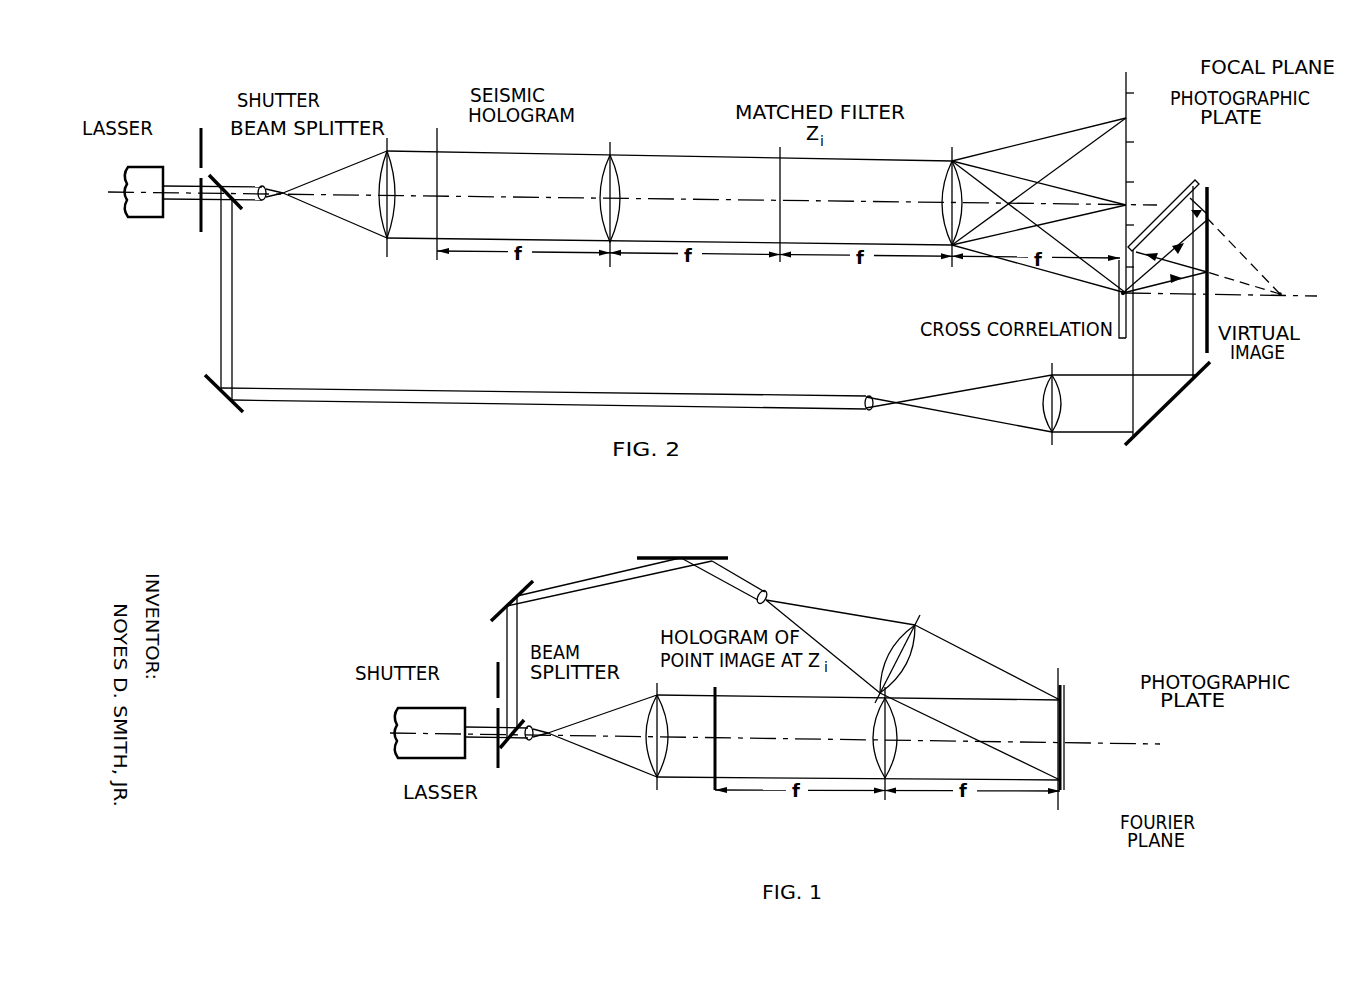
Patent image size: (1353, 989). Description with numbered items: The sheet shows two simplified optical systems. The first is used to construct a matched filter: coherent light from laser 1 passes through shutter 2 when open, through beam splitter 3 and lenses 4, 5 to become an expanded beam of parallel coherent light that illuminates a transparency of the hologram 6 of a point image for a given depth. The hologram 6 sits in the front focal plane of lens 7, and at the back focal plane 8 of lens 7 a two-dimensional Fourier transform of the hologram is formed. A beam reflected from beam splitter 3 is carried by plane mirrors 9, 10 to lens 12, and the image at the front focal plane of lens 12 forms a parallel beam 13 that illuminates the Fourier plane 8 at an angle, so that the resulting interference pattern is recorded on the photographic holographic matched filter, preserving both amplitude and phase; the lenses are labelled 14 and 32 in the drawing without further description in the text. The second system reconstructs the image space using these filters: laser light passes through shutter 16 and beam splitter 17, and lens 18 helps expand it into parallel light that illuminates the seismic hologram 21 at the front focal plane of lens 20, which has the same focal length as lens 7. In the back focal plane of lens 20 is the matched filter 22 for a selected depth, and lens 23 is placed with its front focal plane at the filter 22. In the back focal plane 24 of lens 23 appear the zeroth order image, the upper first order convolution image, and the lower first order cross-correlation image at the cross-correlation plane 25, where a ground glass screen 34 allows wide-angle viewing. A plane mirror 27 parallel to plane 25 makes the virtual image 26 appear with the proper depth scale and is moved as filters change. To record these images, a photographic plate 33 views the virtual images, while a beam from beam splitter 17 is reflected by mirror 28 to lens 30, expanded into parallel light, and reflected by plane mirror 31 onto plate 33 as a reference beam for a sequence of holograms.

In FIG. 1, the laser 1 is at (428, 759).
In FIG. 1, the shutter 2 is at (497, 679).
In FIG. 1, the beam splitter 3 is at (524, 722).
In FIG. 1, the lens 4 is at (534, 740).
In FIG. 2, the lens 5 is at (147, 170).
In FIG. 1, the lens 5 is at (657, 778).
In FIG. 1, the hologram 6 is at (718, 690).
In FIG. 1, the lens 7 is at (885, 800).
In FIG. 1, the back focal plane 8 is at (1058, 810).
In FIG. 1, the plane mirror 9 is at (515, 597).
In FIG. 1, the plane mirror 10 is at (698, 546).
In FIG. 1, the lens 12 is at (916, 628).
In FIG. 1, the parallel beam 13 is at (965, 654).
In FIG. 2, the photographic plate / lens 14 is at (386, 253).
In FIG. 1, the photographic plate / lens 14 is at (1064, 692).
In FIG. 2, the shutter 16 is at (201, 130).
In FIG. 2, the beam splitter 17 is at (221, 178).
In FIG. 2, the lens 18 is at (264, 202).
In FIG. 2, the lens 20 is at (610, 258).
In FIG. 2, the seismic hologram 21 is at (437, 130).
In FIG. 2, the matched filter 22 is at (780, 150).
In FIG. 2, the lens 23 is at (952, 263).
In FIG. 2, the back focal plane 24 is at (1133, 77).
In FIG. 2, the cross-correlation plane 25 is at (1112, 298).
In FIG. 2, the virtual image 26 is at (1280, 298).
In FIG. 2, the plane mirror 27 is at (1208, 203).
In FIG. 2, the mirror 28 is at (232, 402).
In FIG. 2, the lens 30 is at (1050, 440).
In FIG. 2, the plane mirror 31 is at (1152, 422).
In FIG. 2, the photographic plate 32 is at (1207, 190).
In FIG. 2, the photographic plate 33 is at (1170, 205).
In FIG. 2, the ground glass screen 34 is at (1118, 340).